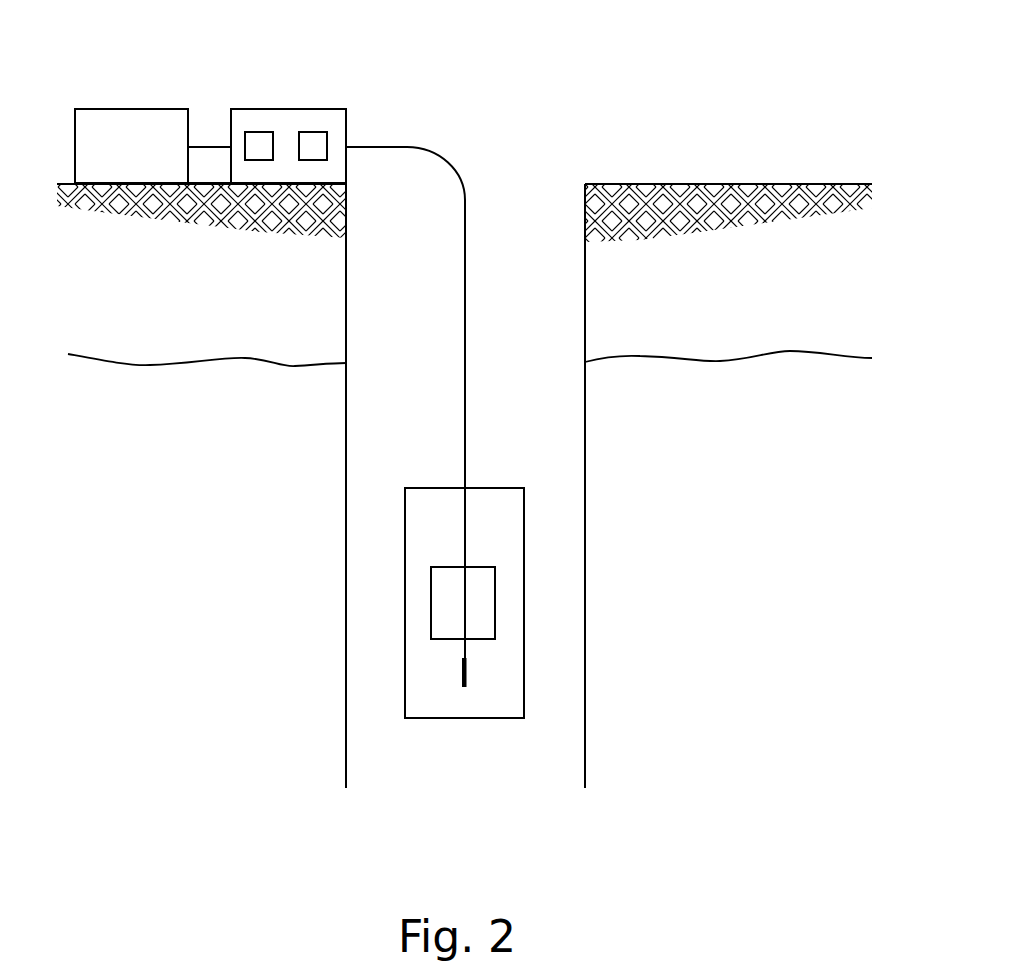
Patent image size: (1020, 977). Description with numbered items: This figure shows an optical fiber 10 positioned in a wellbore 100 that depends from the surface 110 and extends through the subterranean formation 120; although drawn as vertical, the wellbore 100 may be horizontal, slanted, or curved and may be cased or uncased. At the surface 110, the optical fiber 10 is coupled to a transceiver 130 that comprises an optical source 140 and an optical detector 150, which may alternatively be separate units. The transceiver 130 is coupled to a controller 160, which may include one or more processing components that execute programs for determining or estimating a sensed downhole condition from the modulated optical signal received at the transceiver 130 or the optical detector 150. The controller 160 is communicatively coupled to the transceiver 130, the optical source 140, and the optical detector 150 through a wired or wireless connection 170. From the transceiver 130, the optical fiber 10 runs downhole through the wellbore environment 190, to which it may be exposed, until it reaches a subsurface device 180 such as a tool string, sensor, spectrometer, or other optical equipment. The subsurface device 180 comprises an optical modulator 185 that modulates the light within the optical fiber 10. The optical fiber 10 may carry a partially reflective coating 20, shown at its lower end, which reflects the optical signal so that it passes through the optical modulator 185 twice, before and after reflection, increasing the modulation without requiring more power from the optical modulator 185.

The optical fiber 10 is at (465, 300).
The partially reflective coating 20 is at (468, 677).
The wellbore 100 is at (585, 453).
The surface 110 is at (702, 184).
The subterranean formation 120 is at (197, 358).
The transceiver 130 is at (346, 121).
The optical source 140 is at (315, 132).
The optical detector 150 is at (258, 132).
The controller 160 is at (133, 109).
The wired or wireless connection 170 is at (208, 147).
The subsurface device 180 is at (524, 570).
The optical modulator 185 is at (431, 598).
The wellbore environment 190 is at (548, 328).